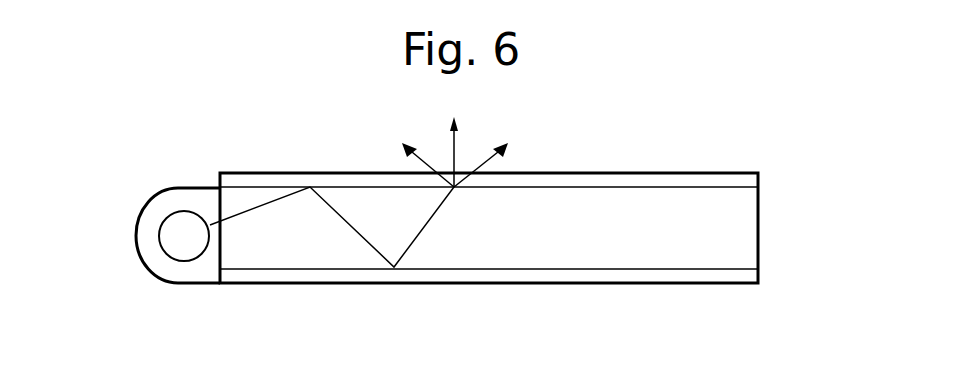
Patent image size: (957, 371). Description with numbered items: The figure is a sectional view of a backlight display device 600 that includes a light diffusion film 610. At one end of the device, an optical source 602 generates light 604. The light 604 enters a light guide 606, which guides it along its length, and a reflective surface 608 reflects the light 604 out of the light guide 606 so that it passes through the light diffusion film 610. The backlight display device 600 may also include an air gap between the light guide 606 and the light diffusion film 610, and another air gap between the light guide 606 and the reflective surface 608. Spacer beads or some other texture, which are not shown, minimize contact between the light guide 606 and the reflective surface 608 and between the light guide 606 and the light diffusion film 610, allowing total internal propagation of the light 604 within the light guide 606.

The backlight display device 600 is at (447, 211).
The optical source 602 is at (160, 237).
The light 604 is at (360, 237).
The light guide 606 is at (748, 227).
The reflective surface 608 is at (618, 273).
The light diffusion film 610 is at (618, 180).